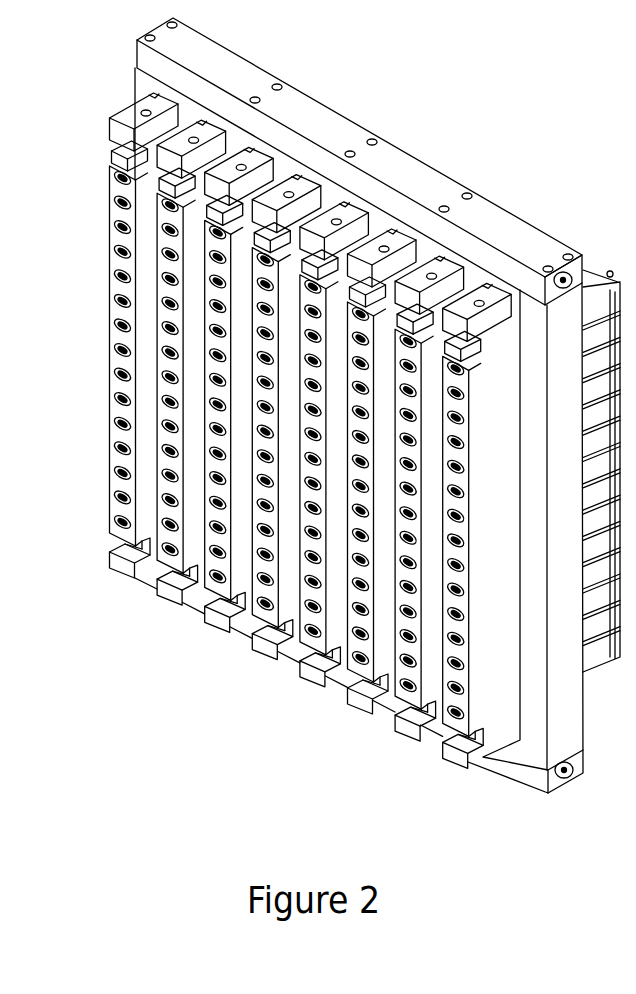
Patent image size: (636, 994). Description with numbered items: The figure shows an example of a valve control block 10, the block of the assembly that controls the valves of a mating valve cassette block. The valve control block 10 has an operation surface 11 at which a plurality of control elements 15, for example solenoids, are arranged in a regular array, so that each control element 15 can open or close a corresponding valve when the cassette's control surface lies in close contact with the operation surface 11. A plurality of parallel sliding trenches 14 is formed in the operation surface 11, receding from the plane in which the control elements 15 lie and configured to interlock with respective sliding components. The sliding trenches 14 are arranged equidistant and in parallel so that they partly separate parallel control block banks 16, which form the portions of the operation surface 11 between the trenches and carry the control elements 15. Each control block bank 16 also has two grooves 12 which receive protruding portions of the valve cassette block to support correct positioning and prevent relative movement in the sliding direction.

The valve control block 10 is at (438, 80).
The operation surface 11 is at (157, 262).
The groove 12 is at (110, 153).
The sliding trench 14 is at (145, 588).
The control element 15 is at (110, 468).
The control block bank 16 is at (430, 677).